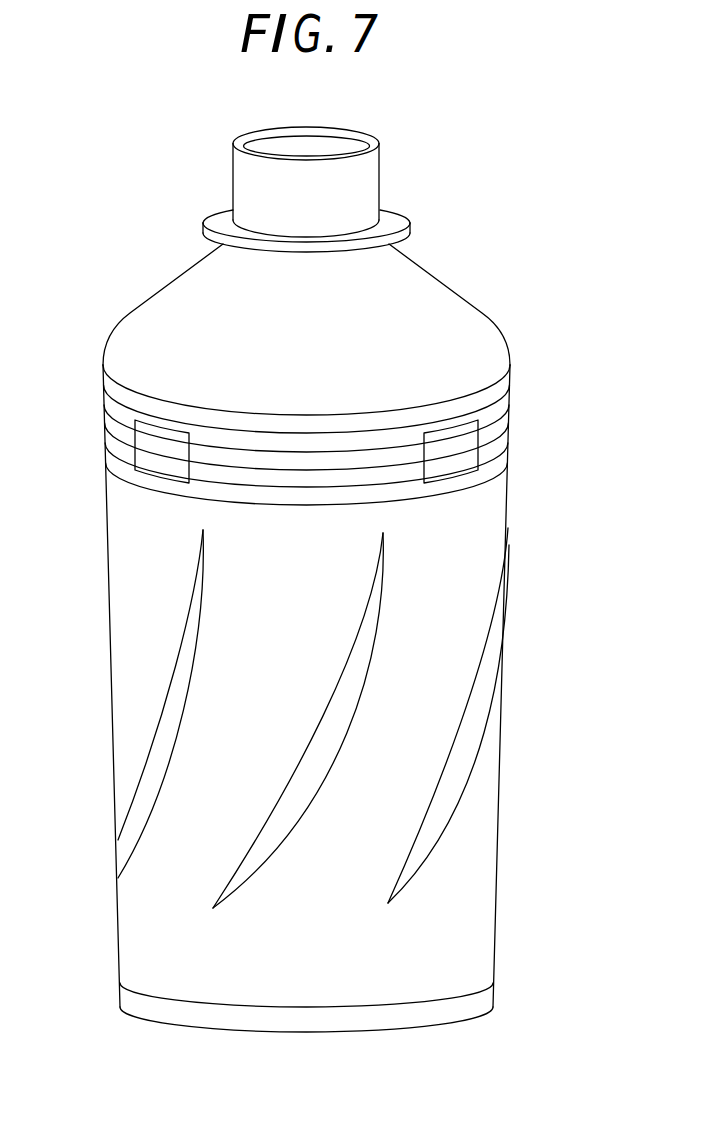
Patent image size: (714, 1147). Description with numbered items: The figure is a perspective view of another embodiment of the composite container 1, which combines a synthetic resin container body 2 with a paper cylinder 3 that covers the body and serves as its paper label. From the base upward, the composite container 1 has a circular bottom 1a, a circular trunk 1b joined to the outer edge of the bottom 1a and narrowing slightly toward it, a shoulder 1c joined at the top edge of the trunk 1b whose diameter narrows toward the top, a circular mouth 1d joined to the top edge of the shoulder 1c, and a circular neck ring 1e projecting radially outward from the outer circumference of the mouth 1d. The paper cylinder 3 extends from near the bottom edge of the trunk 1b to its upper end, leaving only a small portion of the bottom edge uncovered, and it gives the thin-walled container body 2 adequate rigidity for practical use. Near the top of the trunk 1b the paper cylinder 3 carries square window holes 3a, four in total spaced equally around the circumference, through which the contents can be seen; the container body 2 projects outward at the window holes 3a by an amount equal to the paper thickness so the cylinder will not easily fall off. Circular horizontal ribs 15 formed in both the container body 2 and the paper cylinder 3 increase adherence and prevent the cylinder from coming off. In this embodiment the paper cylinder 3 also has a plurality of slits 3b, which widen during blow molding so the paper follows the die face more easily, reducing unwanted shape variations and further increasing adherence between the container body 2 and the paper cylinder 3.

The composite container 1 is at (498, 183).
The bottom 1a is at (340, 1032).
The trunk 1b is at (492, 767).
The shoulder 1c is at (425, 275).
The mouth 1d is at (373, 168).
The neck ring 1e is at (407, 213).
The container body 2 is at (465, 295).
The paper cylinder 3 is at (514, 498).
The window holes 3a is at (133, 433).
The slits 3b is at (170, 678).
The horizontal ribs 15 is at (467, 412).